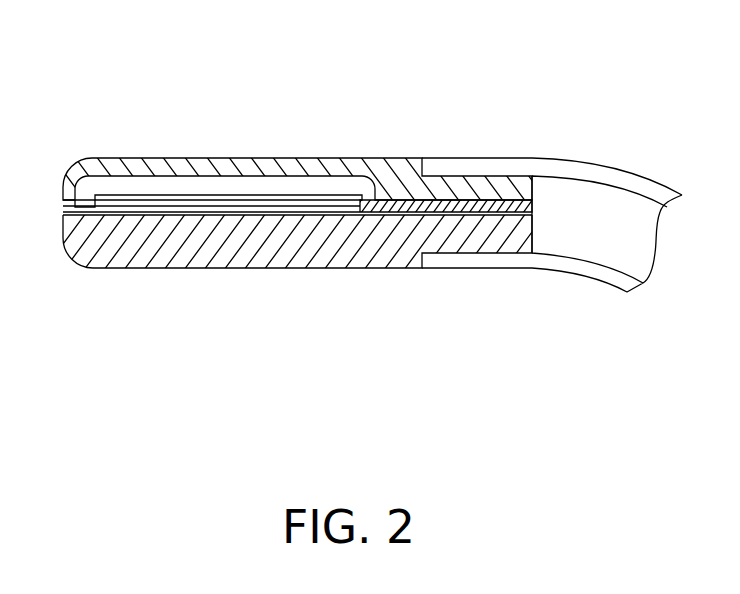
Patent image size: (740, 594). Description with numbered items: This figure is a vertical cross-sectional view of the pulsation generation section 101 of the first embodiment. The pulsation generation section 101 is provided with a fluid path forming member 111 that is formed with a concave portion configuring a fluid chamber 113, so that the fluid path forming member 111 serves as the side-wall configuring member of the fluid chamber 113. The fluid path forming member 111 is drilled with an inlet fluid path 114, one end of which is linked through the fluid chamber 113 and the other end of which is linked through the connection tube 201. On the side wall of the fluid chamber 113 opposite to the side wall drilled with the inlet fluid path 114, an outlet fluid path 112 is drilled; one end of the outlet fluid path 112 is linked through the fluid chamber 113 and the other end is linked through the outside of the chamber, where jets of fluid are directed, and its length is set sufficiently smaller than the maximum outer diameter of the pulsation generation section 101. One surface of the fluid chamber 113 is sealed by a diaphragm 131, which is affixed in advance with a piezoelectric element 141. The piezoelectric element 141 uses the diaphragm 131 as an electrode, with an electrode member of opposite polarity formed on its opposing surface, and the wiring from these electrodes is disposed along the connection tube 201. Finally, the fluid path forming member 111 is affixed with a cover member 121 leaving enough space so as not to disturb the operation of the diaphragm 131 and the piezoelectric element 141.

The pulsation generation section 101 is at (318, 43).
The fluid path forming member 111 is at (293, 250).
The outlet fluid path 112 is at (73, 255).
The fluid chamber 113 is at (197, 205).
The inlet fluid path 114 is at (448, 215).
The cover member 121 is at (205, 160).
The diaphragm 131 is at (88, 199).
The piezoelectric element 141 is at (342, 200).
The connection tube 201 is at (553, 263).